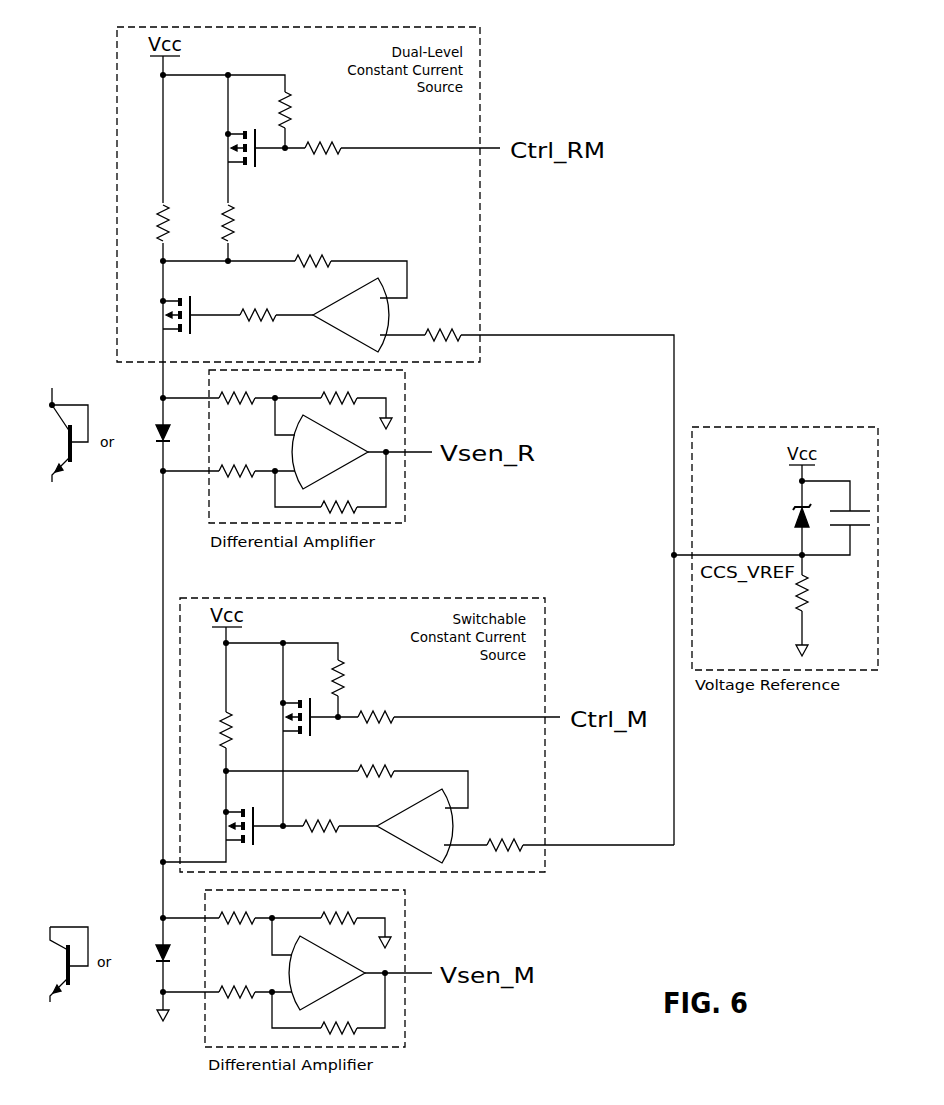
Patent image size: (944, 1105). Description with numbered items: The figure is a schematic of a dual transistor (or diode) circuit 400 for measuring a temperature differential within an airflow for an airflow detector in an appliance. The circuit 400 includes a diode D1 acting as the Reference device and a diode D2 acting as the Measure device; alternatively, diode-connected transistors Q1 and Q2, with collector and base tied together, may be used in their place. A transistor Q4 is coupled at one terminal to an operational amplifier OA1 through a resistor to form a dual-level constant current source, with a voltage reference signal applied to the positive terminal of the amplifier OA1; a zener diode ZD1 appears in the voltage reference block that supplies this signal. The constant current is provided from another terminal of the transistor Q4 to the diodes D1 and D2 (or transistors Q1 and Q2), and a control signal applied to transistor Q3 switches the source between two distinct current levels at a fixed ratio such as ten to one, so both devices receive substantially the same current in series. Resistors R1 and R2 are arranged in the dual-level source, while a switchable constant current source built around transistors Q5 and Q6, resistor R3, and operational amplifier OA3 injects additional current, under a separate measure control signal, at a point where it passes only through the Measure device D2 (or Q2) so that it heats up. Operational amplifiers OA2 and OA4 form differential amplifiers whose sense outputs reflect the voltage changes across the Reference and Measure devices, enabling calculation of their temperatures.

The dual transistor (or diode) circuit 400 is at (677, 169).
The transistor Q1 is at (53, 435).
The diode D1 is at (145, 435).
The transistor Q2 is at (51, 964).
The diode D2 is at (145, 955).
The transistor Q3 is at (225, 148).
The transistor Q4 is at (160, 315).
The transistor Q5 is at (280, 717).
The transistor Q6 is at (222, 826).
The resistor R1 is at (147, 223).
The resistor R2 is at (212, 223).
The resistor R3 is at (210, 730).
The operational amplifier OA1 is at (351, 315).
The operational amplifier OA2 is at (330, 452).
The operational amplifier OA3 is at (415, 826).
The operational amplifier OA4 is at (327, 973).
The zener diode ZD1 is at (780, 516).